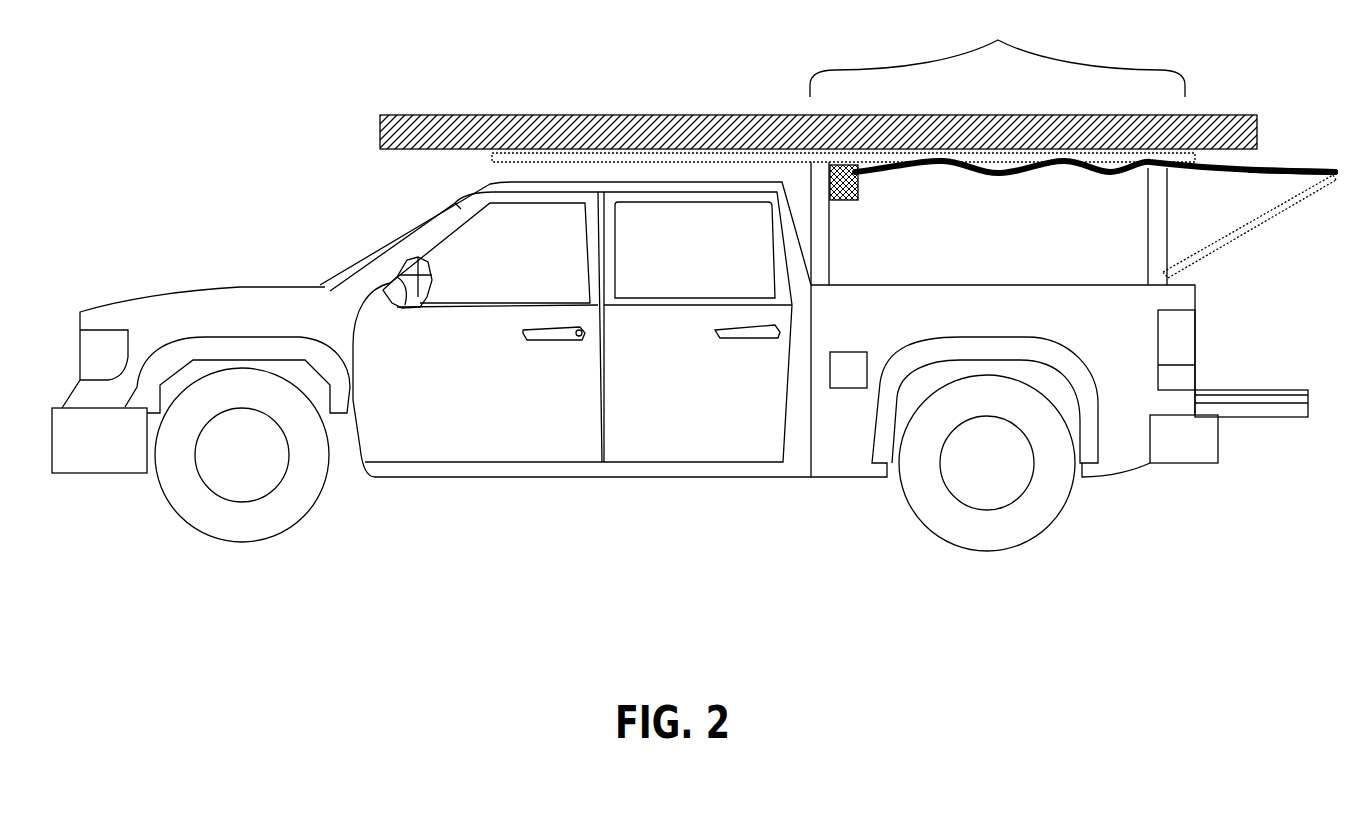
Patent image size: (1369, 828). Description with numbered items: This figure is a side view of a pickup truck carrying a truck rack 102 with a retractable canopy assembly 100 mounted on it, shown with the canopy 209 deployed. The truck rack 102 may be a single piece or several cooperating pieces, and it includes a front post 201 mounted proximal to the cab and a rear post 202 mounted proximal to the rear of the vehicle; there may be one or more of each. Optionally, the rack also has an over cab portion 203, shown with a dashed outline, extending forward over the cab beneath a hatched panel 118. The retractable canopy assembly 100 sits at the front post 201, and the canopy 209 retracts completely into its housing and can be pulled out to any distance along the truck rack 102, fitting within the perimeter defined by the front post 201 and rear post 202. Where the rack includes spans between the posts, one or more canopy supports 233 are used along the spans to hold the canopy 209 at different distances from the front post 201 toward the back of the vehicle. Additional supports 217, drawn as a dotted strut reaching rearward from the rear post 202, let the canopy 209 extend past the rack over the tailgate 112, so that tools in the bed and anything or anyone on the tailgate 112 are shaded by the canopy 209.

The truck rack 102 is at (997, 52).
The roof panel 118 is at (515, 116).
The over cab portion 203 is at (490, 163).
The retractable canopy assembly 100 is at (857, 190).
The canopy supports 233 is at (1055, 166).
The canopy 209 is at (1292, 152).
The rear post 202 is at (1147, 240).
The front post 201 is at (830, 262).
The additional supports 217 is at (1238, 240).
The tailgate 112 is at (1262, 406).